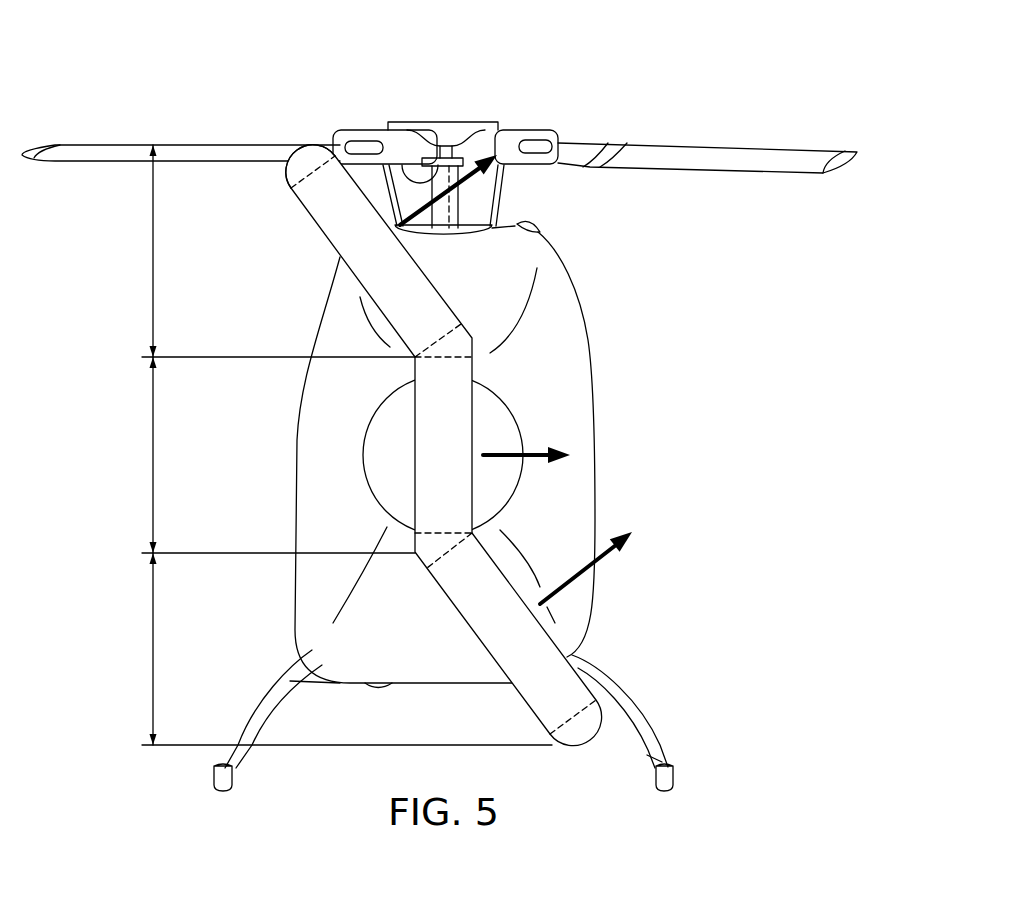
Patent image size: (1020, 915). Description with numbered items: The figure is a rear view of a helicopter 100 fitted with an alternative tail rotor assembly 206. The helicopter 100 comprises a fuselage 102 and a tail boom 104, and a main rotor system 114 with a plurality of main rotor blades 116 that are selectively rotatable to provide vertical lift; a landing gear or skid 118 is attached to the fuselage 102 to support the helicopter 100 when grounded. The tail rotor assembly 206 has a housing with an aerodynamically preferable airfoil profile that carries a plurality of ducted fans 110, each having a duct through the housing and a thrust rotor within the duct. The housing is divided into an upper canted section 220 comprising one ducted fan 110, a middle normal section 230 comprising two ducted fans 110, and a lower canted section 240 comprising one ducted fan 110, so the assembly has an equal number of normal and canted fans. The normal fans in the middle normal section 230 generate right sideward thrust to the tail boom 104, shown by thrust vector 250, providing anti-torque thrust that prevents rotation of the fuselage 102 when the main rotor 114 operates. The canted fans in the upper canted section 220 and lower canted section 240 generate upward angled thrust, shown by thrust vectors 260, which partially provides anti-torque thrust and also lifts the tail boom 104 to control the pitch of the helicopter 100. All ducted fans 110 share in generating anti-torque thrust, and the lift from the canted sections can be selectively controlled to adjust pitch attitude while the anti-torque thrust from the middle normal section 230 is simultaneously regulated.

The helicopter 100 is at (655, 76).
The fuselage 102 is at (296, 590).
The tail boom 104 is at (374, 488).
The ducted fan 110 is at (306, 220).
The main rotor system 114 is at (463, 120).
The main rotor blade 116 is at (110, 143).
The landing gear 118 is at (283, 695).
The tail rotor assembly 206 is at (300, 143).
The upper canted section 220 is at (152, 255).
The middle normal section 230 is at (152, 455).
The lower canted section 240 is at (152, 672).
The thrust vector 250 is at (540, 445).
The thrust vector 260 is at (445, 208).